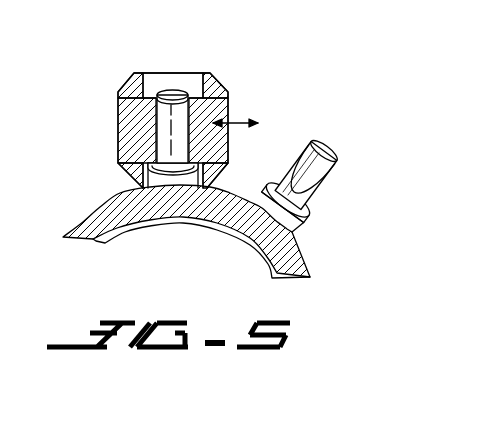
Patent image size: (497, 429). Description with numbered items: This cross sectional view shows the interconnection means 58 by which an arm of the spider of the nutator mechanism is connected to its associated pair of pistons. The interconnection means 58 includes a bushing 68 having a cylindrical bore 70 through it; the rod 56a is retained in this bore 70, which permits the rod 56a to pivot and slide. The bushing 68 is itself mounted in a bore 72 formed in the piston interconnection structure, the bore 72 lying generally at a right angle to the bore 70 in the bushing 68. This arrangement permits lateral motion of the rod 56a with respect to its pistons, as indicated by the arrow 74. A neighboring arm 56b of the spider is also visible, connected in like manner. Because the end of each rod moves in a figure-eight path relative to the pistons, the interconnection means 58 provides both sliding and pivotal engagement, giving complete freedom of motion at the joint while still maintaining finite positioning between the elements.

The arm 56a is at (172, 93).
The arm 56b is at (335, 152).
The interconnection means 58 is at (232, 93).
The bushing 68 is at (118, 141).
The cylindrical bore 70 is at (118, 118).
The bore 72 is at (213, 157).
The arrow 74 is at (247, 122).